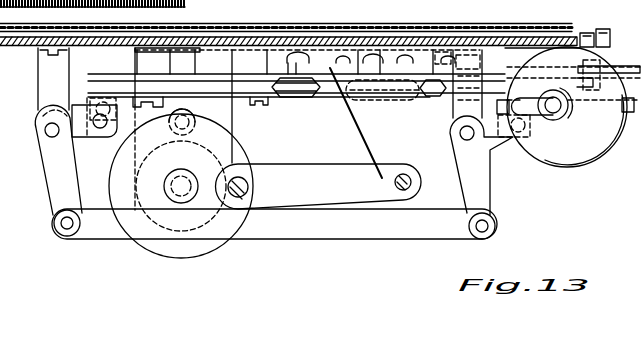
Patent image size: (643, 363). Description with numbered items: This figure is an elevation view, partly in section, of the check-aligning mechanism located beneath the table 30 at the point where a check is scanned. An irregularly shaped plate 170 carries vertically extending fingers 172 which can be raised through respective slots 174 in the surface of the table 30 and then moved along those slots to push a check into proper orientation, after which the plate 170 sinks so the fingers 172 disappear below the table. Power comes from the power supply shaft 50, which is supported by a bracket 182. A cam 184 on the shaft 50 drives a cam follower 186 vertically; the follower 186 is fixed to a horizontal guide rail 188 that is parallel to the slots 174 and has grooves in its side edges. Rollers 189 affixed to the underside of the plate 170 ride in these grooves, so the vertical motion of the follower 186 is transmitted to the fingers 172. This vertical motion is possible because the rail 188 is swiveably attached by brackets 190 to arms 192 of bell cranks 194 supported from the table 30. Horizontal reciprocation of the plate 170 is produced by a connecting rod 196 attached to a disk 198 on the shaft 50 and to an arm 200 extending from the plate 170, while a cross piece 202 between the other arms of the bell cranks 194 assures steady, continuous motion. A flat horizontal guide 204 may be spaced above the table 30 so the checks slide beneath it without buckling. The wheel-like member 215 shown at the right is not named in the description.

The table 30 is at (428, 27).
The power supply shaft 50 is at (183, 177).
The irregularly shaped plate 170 is at (329, 67).
The vertically extending fingers 172 is at (392, 26).
The slots 174 is at (538, 33).
The bracket 182 is at (199, 31).
The cam 184 is at (155, 251).
The cam follower 186 is at (200, 122).
The horizontal guide rail 188 is at (195, 78).
The rollers 189 is at (298, 88).
The brackets 190 is at (102, 100).
The arms 192 is at (80, 135).
The bell cranks 194 is at (50, 182).
The connecting rod 196 is at (300, 164).
The disk 198 is at (213, 252).
The arm 200 is at (368, 123).
The cross piece 202 is at (274, 224).
The flat horizontal guide 204 is at (331, 26).
The wheel 215 is at (573, 107).